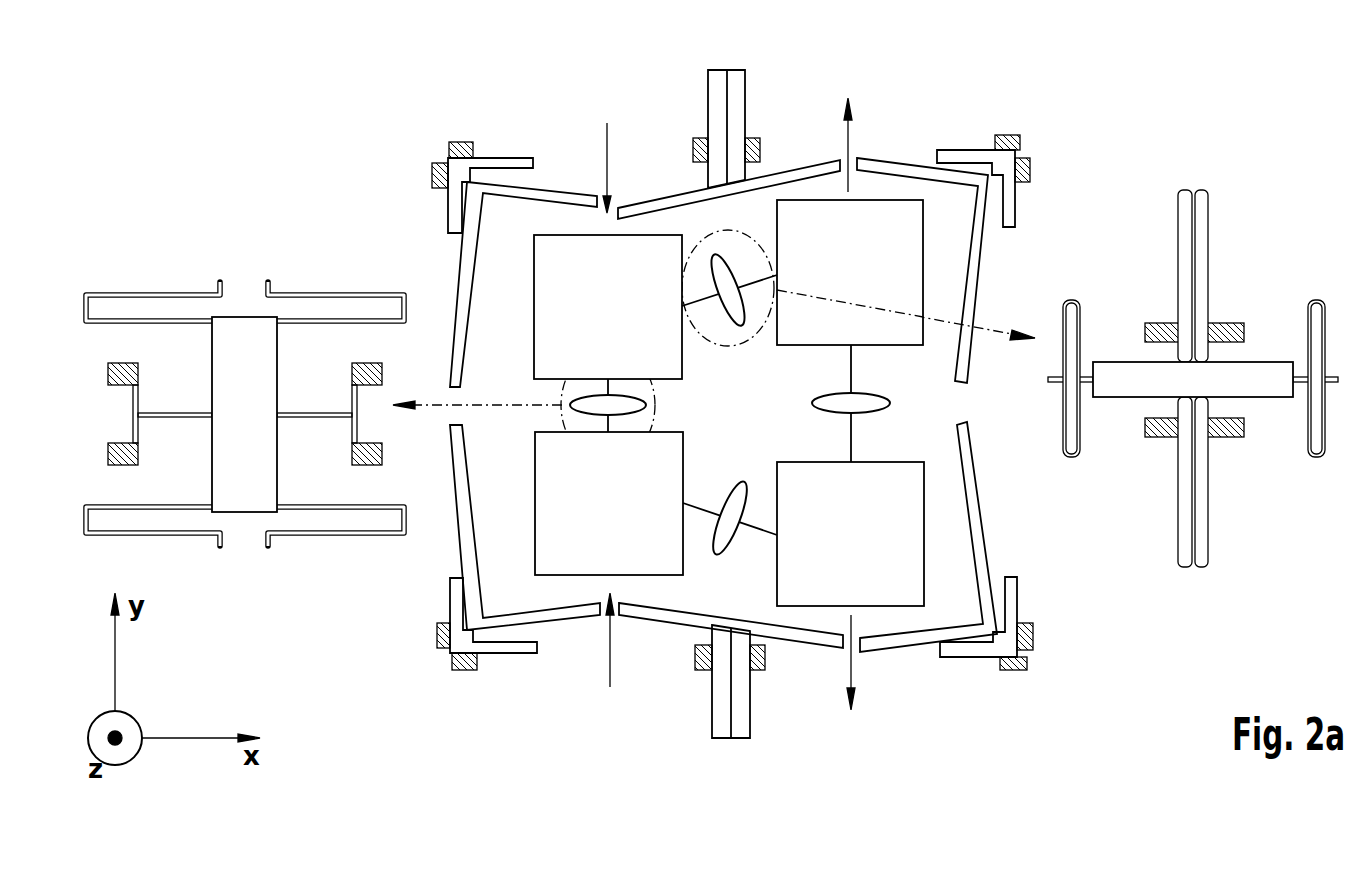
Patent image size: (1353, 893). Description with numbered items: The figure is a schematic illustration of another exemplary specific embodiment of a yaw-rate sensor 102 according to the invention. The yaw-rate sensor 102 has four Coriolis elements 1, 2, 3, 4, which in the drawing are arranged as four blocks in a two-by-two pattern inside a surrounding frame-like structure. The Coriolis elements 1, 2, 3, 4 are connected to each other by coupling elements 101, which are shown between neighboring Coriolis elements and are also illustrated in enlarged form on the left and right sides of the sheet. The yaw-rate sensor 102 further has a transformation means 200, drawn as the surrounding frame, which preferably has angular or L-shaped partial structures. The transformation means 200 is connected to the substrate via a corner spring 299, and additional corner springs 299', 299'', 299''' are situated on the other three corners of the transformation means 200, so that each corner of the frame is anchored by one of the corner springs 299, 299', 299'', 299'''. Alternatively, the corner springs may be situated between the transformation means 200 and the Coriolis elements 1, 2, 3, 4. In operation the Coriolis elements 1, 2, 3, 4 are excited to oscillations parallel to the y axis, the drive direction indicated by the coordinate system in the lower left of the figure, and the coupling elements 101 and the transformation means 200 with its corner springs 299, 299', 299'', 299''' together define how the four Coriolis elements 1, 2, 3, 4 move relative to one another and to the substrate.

The coupling element 101 is at (147, 233).
The yaw-rate sensor 102 is at (630, 100).
The transformation means 200 is at (463, 262).
The Coriolis element 1 is at (534, 250).
The Coriolis element 2 is at (535, 566).
The Coriolis element 3 is at (923, 248).
The Coriolis element 4 is at (923, 560).
The corner spring 299 is at (482, 162).
The corner spring 299' is at (983, 157).
The corner spring 299'' is at (487, 649).
The corner spring 299''' is at (986, 648).